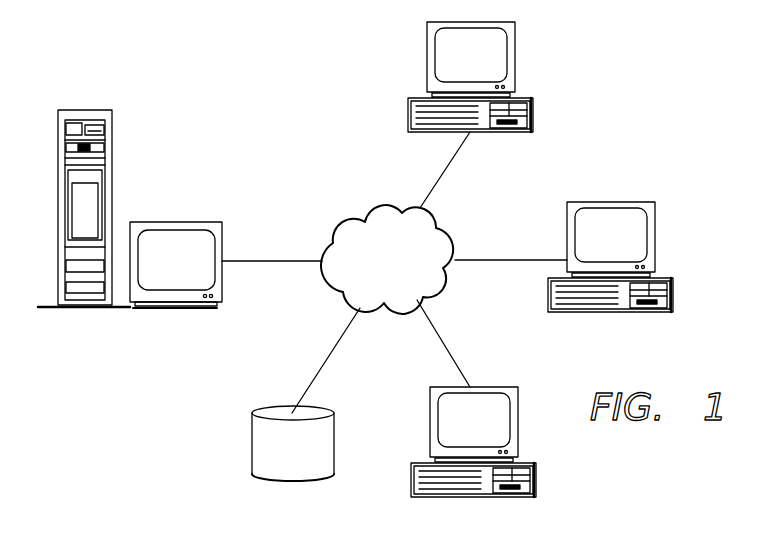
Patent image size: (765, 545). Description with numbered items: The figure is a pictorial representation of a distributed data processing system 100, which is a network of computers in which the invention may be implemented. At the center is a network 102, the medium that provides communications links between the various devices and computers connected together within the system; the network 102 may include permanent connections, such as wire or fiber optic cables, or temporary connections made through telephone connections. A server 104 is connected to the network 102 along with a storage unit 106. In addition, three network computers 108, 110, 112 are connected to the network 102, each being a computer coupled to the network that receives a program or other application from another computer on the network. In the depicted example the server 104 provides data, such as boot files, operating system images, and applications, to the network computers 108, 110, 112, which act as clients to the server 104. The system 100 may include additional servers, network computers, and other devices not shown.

The distributed data processing system 100 is at (241, 58).
The network 102 is at (408, 269).
The server 104 is at (176, 222).
The storage unit 106 is at (252, 446).
The network computer 108 is at (533, 115).
The network computer 110 is at (612, 202).
The network computer 112 is at (537, 485).